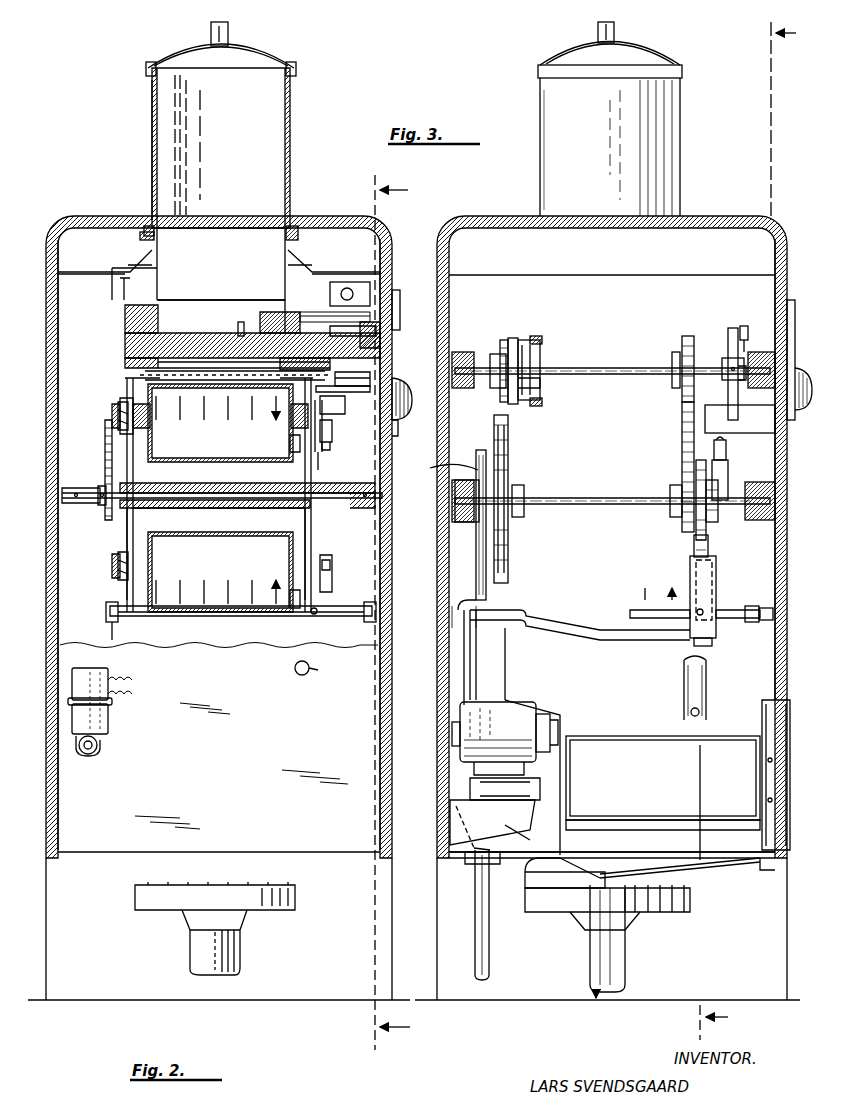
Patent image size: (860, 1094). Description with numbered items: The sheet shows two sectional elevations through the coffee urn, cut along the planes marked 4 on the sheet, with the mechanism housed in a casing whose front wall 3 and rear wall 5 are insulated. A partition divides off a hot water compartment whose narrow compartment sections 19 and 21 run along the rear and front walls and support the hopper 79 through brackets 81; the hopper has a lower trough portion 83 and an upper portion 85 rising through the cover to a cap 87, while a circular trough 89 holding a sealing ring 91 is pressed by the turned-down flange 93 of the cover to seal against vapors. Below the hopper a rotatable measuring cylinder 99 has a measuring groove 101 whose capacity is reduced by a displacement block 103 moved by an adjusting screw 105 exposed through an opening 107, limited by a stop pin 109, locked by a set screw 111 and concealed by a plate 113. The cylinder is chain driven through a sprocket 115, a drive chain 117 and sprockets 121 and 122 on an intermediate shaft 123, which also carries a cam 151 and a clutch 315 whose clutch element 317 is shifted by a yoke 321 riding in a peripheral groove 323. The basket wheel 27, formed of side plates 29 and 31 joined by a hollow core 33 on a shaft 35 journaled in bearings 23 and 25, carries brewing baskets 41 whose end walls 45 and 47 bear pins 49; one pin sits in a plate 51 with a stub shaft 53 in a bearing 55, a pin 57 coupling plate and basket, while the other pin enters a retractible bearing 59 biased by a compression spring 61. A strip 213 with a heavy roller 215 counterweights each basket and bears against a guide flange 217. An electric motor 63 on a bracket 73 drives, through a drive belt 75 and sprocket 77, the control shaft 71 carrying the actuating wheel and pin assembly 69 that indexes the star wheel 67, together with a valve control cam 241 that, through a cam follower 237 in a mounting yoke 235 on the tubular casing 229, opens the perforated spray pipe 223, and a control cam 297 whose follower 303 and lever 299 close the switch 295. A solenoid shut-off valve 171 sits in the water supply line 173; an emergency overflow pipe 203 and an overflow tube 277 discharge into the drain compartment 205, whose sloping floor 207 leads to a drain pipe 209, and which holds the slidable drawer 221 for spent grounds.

In FIG. 2, the front wall 3 is at (392, 610).
In FIG. 3, the front wall 3 is at (787, 546).
In FIG. 2, the section line 4- 4 is at (381, 612).
In FIG. 3, the section line 4- 4 is at (748, 531).
In FIG. 2, the rear wall 5 is at (46, 610).
In FIG. 3, the rear wall 5 is at (437, 546).
In FIG. 2, the narrow compartment section 19 is at (58, 352).
In FIG. 2, the narrow compartment section 21 is at (400, 436).
In FIG. 2, the bearing 23 is at (68, 490).
In FIG. 2, the bearing 25 is at (368, 484).
In FIG. 2, the basket wheel 27 is at (220, 431).
In FIG. 2, the circular side plate 29 is at (132, 530).
In FIG. 2, the circular side plate 31 is at (303, 524).
In FIG. 2, the hollow cylindrical core 33 is at (222, 508).
In FIG. 2, the shaft 35 is at (100, 506).
In FIG. 2, the brewing basket 41 is at (216, 500).
In FIG. 2, the end wall 45 is at (290, 430).
In FIG. 2, the end wall 47 is at (152, 426).
In FIG. 2, the pin 49 is at (150, 380).
In FIG. 2, the plate 51 is at (298, 455).
In FIG. 2, the stub shaft 53 is at (345, 404).
In FIG. 2, the bearing 55 is at (318, 456).
In FIG. 2, the pin 57 is at (290, 440).
In FIG. 2, the retractible bearing 59 is at (118, 404).
In FIG. 2, the compression spring 61 is at (138, 450).
In FIG. 3, the electric motor 63 is at (505, 732).
In FIG. 2, the star wheel 67 is at (105, 440).
In FIG. 3, the intermittent actuating wheel and pin assembly 69 is at (508, 450).
In FIG. 3, the control shaft 71 is at (604, 498).
In FIG. 3, the bracket 73 is at (500, 822).
In FIG. 3, the drive belt 75 is at (478, 578).
In FIG. 3, the sprocket 77 is at (444, 469).
In FIG. 2, the hopper 79 is at (221, 184).
In FIG. 3, the hopper 79 is at (610, 140).
In FIG. 2, the brackets 81 is at (132, 250).
In FIG. 2, the lower trough portion 83 is at (168, 282).
In FIG. 2, the upper portion 85 is at (152, 122).
In FIG. 3, the upper portion 85 is at (556, 175).
In FIG. 2, the cap 87 is at (262, 54).
In FIG. 3, the cap 87 is at (568, 56).
In FIG. 2, the circular trough 89 is at (140, 236).
In FIG. 2, the sealing ring 91 is at (286, 232).
In FIG. 2, the turned-down flange 93 is at (156, 228).
In FIG. 2, the measuring cylinder 99 is at (132, 330).
In FIG. 2, the measuring groove 101 is at (196, 318).
In FIG. 2, the adjustable displacement block 103 is at (268, 312).
In FIG. 2, the adjusting screw 105 is at (376, 328).
In FIG. 2, the opening 107 is at (380, 342).
In FIG. 2, the stop pin 109 is at (241, 322).
In FIG. 2, the set screw 111 is at (378, 358).
In FIG. 2, the plate 113 is at (400, 310).
In FIG. 3, the plate 113 is at (792, 340).
In FIG. 2, the sprocket 115 is at (122, 296).
In FIG. 3, the drive chain 117 is at (682, 434).
In FIG. 3, the sprocket 121 is at (680, 344).
In FIG. 3, the sprocket 122 is at (498, 354).
In FIG. 3, the intermediate shaft 123 is at (614, 380).
In FIG. 3, the cam 151 is at (733, 328).
In FIG. 2, the solenoid operated shut-off valve 171 is at (106, 701).
In FIG. 2, the water supply line 173 is at (92, 752).
In FIG. 3, the water supply line 173 is at (490, 918).
In FIG. 2, the emergency overflow pipe 203 is at (357, 289).
In FIG. 3, the overflow or drain compartment 205 is at (612, 838).
In FIG. 3, the floor 207 is at (688, 865).
In FIG. 3, the drain pipe 209 is at (590, 940).
In FIG. 2, the strip 213 is at (322, 398).
In FIG. 2, the roller 215 is at (332, 440).
In FIG. 2, the guide flange 217 is at (330, 383).
In FIG. 3, the slidable drawer 221 is at (663, 798).
In FIG. 2, the perforated spray pipe 223 is at (206, 618).
In FIG. 3, the perforated spray pipe 223 is at (638, 610).
In FIG. 3, the tubular casing 229 is at (690, 566).
In FIG. 3, the mounting yoke 235 is at (716, 578).
In FIG. 3, the cam follower 237 is at (694, 546).
In FIG. 3, the valve control cam 241 is at (696, 505).
In FIG. 2, the overflow tube 277 is at (310, 672).
In FIG. 3, the overflow tube 277 is at (684, 712).
In FIG. 3, the switch 295 is at (740, 379).
In FIG. 3, the control cam 297 is at (718, 520).
In FIG. 3, the lever 299 is at (728, 444).
In FIG. 3, the cam follower 303 is at (718, 466).
In FIG. 3, the clutch 315 is at (522, 356).
In FIG. 3, the clutch element 317 is at (542, 352).
In FIG. 3, the yoke 321 is at (540, 344).
In FIG. 3, the peripheral groove 323 is at (540, 384).